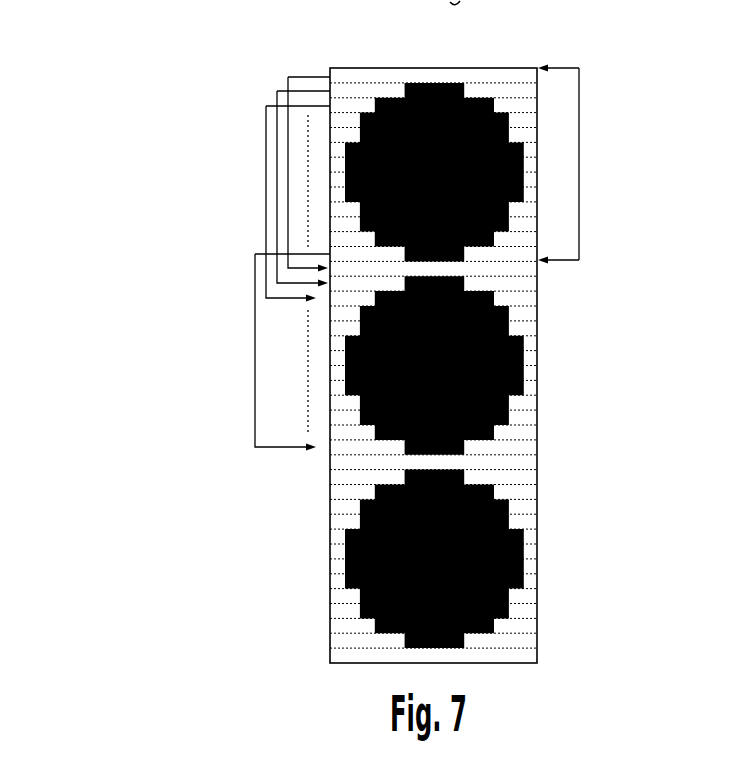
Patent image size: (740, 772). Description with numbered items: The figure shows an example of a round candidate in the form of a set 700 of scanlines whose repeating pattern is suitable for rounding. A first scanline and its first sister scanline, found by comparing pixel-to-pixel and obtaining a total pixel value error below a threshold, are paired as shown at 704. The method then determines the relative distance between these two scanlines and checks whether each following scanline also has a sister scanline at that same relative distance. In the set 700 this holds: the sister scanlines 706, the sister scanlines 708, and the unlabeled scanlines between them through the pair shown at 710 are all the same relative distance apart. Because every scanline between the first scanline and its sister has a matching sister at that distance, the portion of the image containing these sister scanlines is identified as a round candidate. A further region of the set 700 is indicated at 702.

The set of scanlines 700 is at (148, 46).
The pixel 702 is at (579, 156).
The pair of first scanline and its sister scanline 704 is at (297, 77).
The sister scanlines 706 is at (277, 86).
The sister scanlines 708 is at (266, 129).
The pair of sister scanlines 710 is at (255, 327).